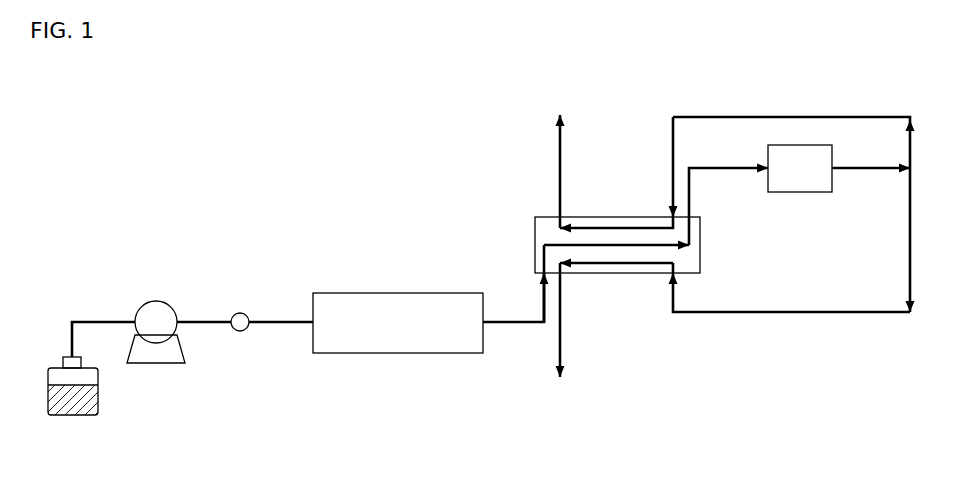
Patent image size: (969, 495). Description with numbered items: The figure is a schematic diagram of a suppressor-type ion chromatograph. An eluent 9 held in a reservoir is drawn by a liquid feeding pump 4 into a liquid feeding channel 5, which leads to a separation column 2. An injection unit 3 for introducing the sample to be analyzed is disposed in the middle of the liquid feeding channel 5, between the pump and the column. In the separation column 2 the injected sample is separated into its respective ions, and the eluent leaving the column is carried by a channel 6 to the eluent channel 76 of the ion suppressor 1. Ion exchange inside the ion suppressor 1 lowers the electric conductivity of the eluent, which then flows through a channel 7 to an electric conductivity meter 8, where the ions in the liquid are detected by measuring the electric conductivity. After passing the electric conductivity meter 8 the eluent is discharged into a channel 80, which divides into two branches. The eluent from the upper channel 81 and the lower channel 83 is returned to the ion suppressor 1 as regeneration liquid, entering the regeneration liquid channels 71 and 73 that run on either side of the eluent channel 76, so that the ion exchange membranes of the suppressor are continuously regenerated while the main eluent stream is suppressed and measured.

The ion suppressor 1 is at (539, 224).
The separation column 2 is at (389, 353).
The injection unit 3 is at (240, 331).
The liquid feeding pump 4 is at (148, 312).
The liquid feeding channel 5 is at (292, 323).
The channel 6 is at (518, 322).
The channel 7 is at (726, 170).
The electric conductivity meter 8 is at (803, 192).
The eluent 9 is at (70, 415).
The regeneration liquid channel 71 is at (638, 228).
The regeneration liquid channel 73 is at (642, 263).
The eluent channel 76 is at (590, 245).
The channel 80 is at (860, 170).
The channel 81 is at (767, 117).
The channel 83 is at (785, 312).